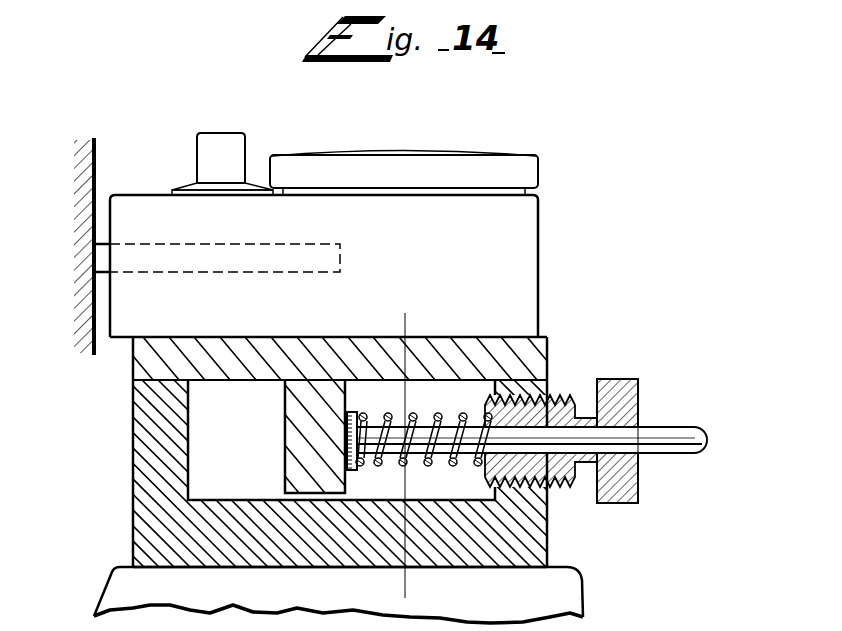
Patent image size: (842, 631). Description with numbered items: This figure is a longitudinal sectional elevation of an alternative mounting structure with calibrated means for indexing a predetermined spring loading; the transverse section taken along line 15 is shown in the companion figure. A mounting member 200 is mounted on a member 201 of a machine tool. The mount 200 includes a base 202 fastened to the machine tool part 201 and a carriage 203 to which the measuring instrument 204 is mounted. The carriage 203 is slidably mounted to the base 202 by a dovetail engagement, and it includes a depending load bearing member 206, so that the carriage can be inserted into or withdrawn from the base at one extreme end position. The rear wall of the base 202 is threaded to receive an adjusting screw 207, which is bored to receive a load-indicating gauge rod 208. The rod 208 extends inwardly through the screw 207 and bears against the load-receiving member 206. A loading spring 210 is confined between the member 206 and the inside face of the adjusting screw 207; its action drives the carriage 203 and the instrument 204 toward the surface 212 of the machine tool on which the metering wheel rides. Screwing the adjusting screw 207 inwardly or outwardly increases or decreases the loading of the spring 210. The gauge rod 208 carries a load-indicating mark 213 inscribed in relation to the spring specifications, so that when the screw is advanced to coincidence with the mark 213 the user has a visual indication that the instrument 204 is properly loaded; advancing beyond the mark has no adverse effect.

The section line 15- 15 is at (410, 313).
The mounting member 200 is at (128, 481).
The member of a machine tool 201 is at (584, 596).
The base 202 is at (133, 521).
The carriage 203 is at (133, 365).
The measuring instrument 204 is at (540, 213).
The depending load bearing member 206 is at (285, 452).
The adjusting screw 207 is at (615, 378).
The load-indicating gauge rod 208 is at (707, 443).
The loading spring 210 is at (384, 412).
The surface of the machine tool 212 is at (94, 187).
The load-indicating mark 213 is at (641, 438).